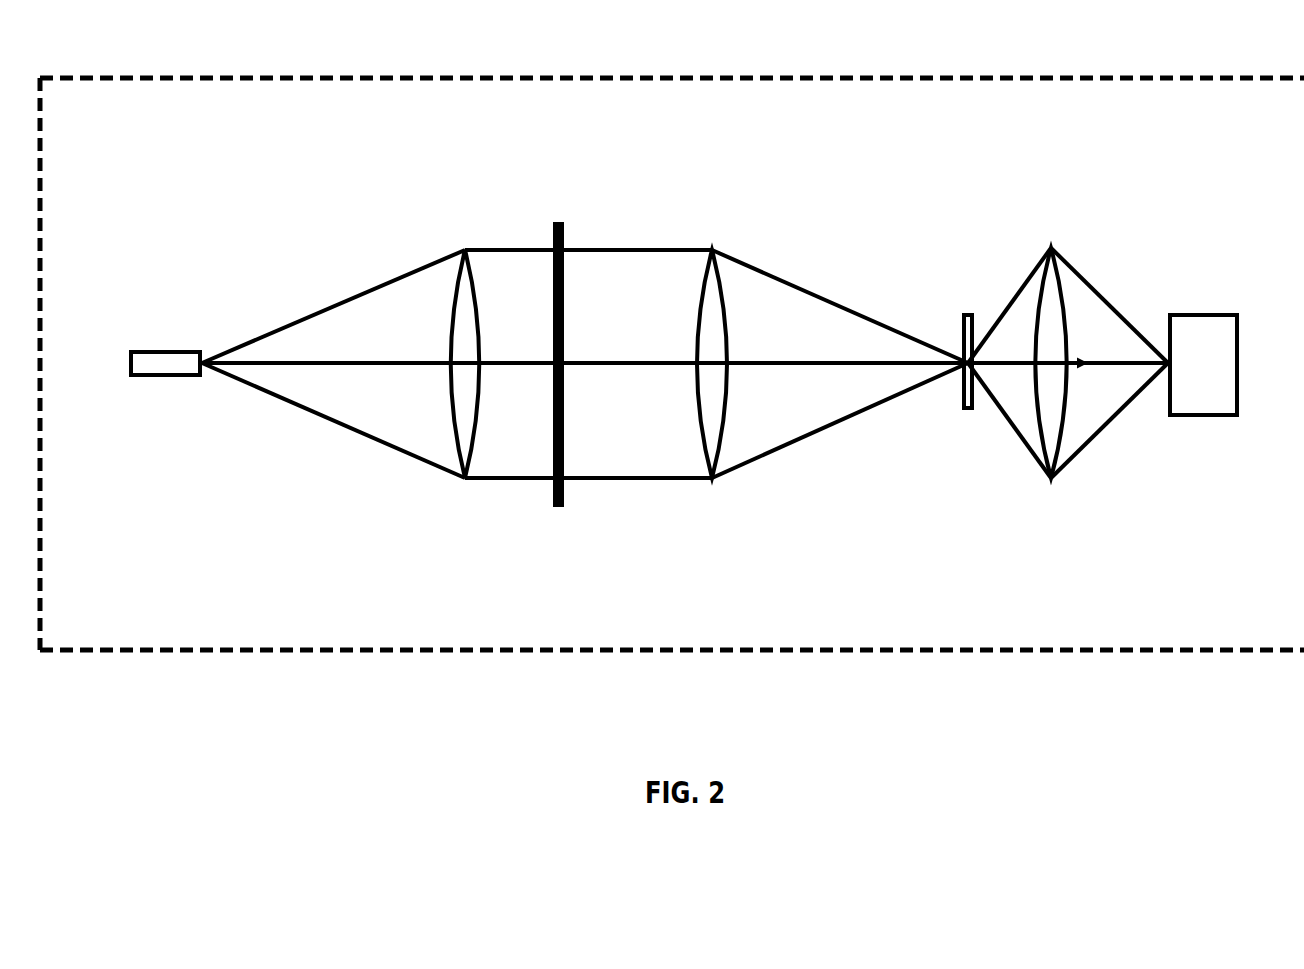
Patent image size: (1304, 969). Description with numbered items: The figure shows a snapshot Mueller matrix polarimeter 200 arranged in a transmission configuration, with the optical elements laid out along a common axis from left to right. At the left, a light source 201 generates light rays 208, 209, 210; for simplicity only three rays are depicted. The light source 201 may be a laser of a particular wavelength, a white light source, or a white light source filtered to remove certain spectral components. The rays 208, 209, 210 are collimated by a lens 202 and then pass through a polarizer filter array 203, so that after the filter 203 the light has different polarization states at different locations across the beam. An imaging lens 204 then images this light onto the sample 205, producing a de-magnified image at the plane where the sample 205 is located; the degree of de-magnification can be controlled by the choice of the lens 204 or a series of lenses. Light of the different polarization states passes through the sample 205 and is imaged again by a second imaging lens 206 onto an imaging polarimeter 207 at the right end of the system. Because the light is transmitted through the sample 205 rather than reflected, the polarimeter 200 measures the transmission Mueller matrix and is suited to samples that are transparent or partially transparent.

The snapshot Mueller matrix polarimeter 200 is at (672, 332).
The light source 201 is at (158, 374).
The lens 202 is at (477, 447).
The polarizer filter array 203 is at (565, 495).
The imaging lens 204 is at (723, 303).
The sample 205 is at (967, 413).
The imaging lens 206 is at (1067, 295).
The imaging polarimeter 207 is at (1238, 340).
The light ray 208 is at (322, 365).
The light ray 209 is at (347, 297).
The light ray 210 is at (235, 383).